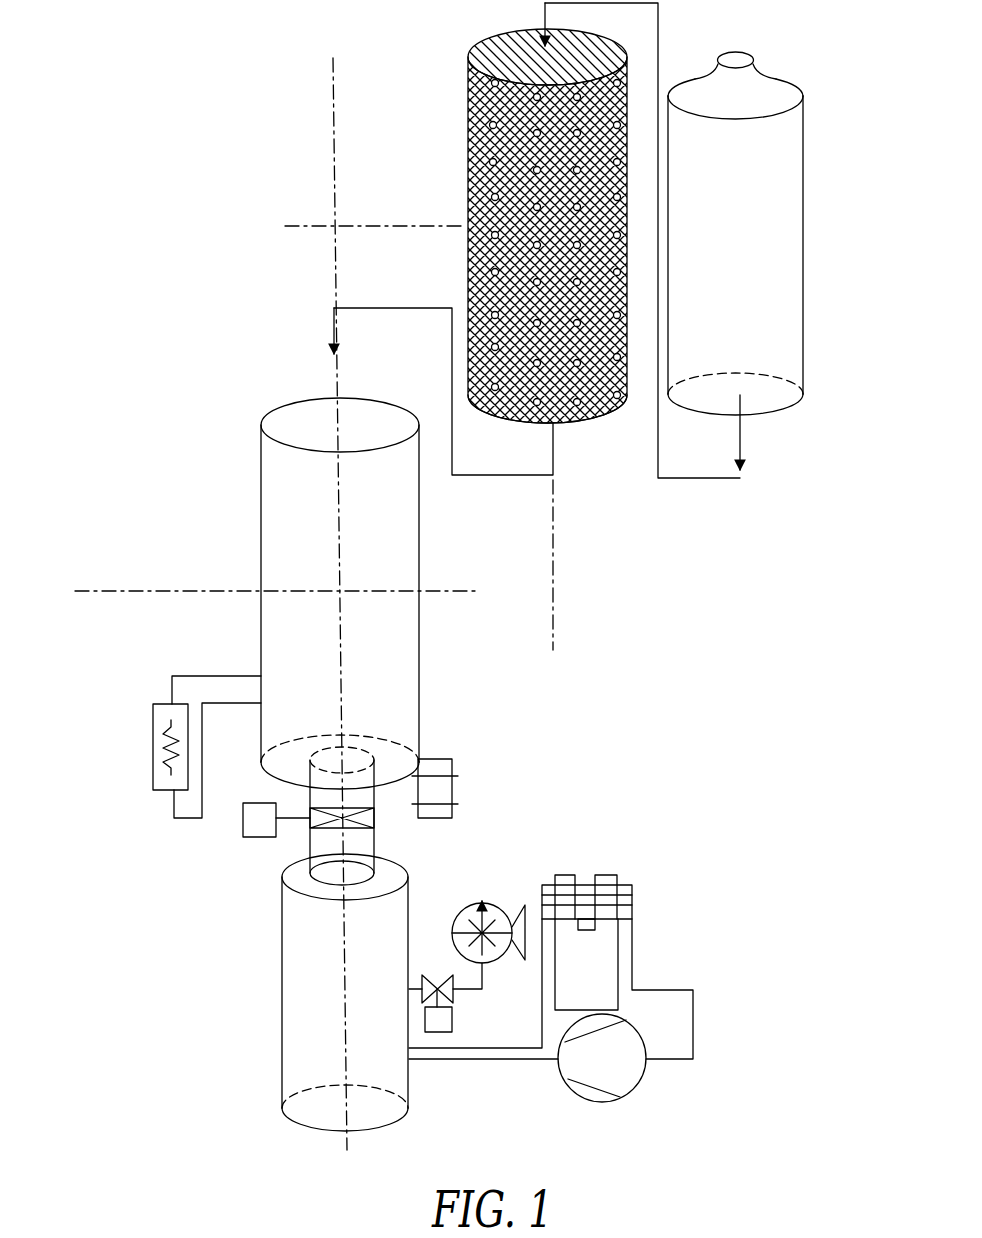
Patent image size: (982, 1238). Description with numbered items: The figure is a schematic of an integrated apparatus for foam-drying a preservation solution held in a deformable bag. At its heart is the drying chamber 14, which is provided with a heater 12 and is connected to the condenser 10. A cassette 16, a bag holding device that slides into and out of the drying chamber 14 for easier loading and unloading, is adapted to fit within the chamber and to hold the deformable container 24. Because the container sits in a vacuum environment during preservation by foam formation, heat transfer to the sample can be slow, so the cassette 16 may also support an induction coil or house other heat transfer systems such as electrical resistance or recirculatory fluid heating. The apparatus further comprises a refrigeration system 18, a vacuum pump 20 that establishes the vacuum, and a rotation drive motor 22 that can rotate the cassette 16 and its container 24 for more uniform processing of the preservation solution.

The condenser 10 is at (282, 932).
The heater 12 is at (153, 740).
The drying chamber 14 is at (261, 455).
The cassette 16 is at (468, 137).
The refrigeration system 18 is at (600, 975).
The vacuum pump 20 is at (497, 908).
The rotation drive motor 22 is at (452, 759).
The deformable container 24 is at (787, 340).